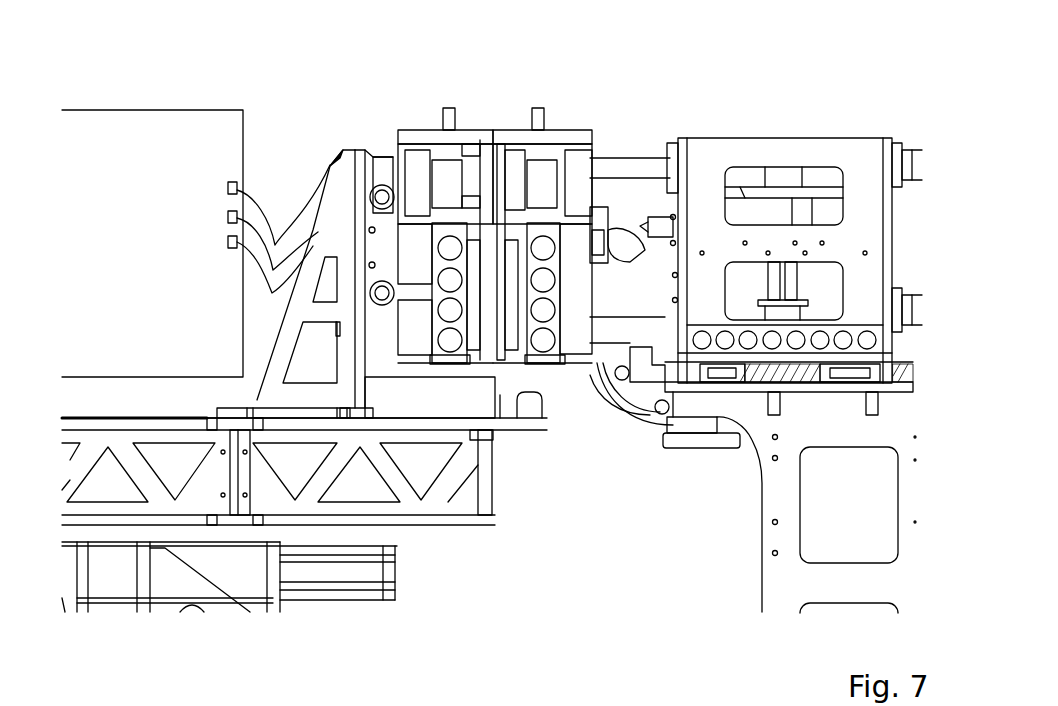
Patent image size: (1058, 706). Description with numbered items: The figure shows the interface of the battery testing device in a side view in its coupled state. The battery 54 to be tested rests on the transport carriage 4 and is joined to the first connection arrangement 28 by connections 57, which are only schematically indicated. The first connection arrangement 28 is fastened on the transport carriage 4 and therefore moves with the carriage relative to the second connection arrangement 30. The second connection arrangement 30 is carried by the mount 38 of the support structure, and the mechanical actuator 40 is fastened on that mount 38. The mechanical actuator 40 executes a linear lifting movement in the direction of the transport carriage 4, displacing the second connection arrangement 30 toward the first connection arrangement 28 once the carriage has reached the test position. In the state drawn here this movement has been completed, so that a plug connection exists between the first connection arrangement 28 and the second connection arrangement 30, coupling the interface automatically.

The transport carriage 4 is at (137, 430).
The first connection arrangement 28 is at (473, 115).
The second connection arrangement 30 is at (517, 112).
The mount 38 is at (697, 305).
The mechanical actuator 40 is at (768, 188).
The battery 54 is at (180, 127).
The connections 57 is at (273, 236).